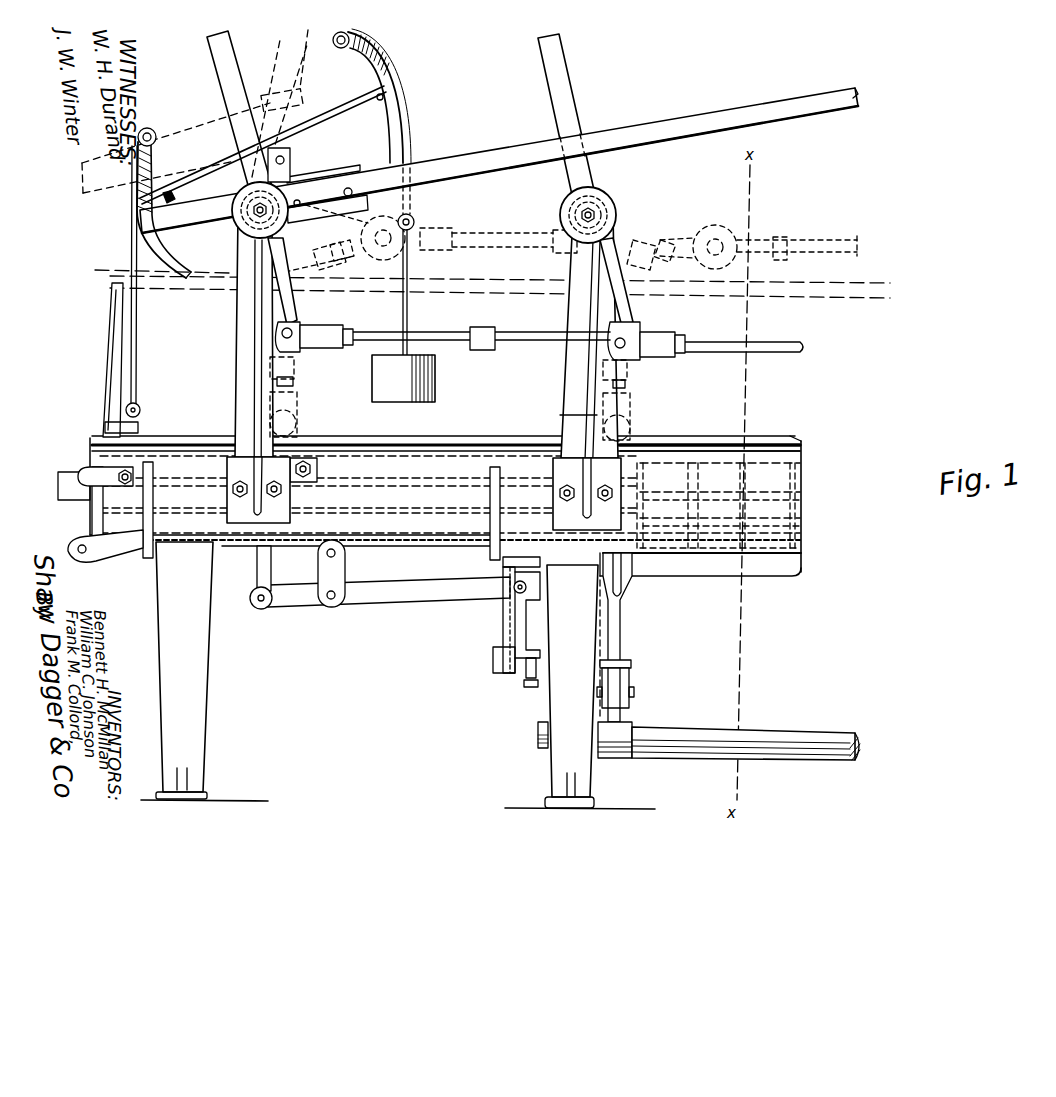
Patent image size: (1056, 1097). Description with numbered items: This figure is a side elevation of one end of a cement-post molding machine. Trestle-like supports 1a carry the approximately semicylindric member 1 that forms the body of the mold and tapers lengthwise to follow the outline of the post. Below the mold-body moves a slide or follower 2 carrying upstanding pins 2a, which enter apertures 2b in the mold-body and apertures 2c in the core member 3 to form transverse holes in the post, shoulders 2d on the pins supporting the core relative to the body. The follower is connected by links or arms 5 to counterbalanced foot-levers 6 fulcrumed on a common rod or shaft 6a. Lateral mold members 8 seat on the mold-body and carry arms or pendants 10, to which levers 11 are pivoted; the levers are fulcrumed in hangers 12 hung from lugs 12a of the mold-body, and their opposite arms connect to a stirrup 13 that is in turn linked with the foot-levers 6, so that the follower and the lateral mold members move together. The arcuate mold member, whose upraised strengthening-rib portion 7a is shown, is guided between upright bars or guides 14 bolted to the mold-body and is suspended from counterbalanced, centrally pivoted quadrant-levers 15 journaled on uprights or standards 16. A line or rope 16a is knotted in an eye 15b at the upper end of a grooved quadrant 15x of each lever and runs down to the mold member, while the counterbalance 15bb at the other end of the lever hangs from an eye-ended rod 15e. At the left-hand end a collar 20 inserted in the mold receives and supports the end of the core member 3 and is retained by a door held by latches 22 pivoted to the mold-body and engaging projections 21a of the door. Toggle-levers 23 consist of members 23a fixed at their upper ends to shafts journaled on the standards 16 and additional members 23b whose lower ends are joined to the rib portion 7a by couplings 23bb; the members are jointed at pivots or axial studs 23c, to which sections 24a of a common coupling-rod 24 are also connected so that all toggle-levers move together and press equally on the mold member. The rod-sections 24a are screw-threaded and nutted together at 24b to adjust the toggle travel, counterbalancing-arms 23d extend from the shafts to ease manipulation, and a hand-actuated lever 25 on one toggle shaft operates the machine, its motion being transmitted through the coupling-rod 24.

The semicylindric member 1 is at (445, 498).
The trestle-like supports 1a is at (170, 650).
The slide or follower 2 is at (741, 571).
The upstanding pins 2a is at (801, 491).
The apertures 2b is at (801, 540).
The apertures in core member 2c is at (716, 505).
The shoulders 2d is at (722, 513).
The core member 3 is at (58, 490).
The links or arms 5 is at (620, 635).
The counterbalanced foot-levers 6 is at (627, 727).
The common rod or shaft 6a is at (746, 733).
The upraised strengthening-rib portion 7a is at (672, 455).
The lateral mold members 8 is at (750, 455).
The arms or pendants 10 is at (257, 568).
The levers 11 is at (397, 595).
The hangers 12 is at (345, 570).
The lugs 12a is at (319, 484).
The stirrup 13 is at (503, 627).
The upright bars or guides 14 is at (108, 360).
The quadrant-levers 15 is at (315, 125).
The eye 15b is at (332, 34).
The grooved quadrant 15x is at (404, 100).
The rod 15e is at (409, 303).
The counterbalance 15bb is at (436, 378).
The uprights or standards 16 is at (237, 395).
The line or rope 16a is at (136, 358).
The collar 20 is at (133, 547).
The projections 21a is at (94, 517).
The latches 22 is at (84, 470).
The toggle-levers 23 is at (293, 352).
The toggle members 23a is at (250, 238).
The additional toggle members 23b is at (296, 378).
The pivots or axial studs 23c is at (282, 333).
The counterbalancing-arms 23d is at (232, 110).
The couplings 23bb is at (554, 415).
The coupling-rod 24 is at (537, 337).
The rod-sections 24a is at (317, 330).
The nuts 24b is at (350, 348).
The hand-actuated lever 25 is at (638, 132).